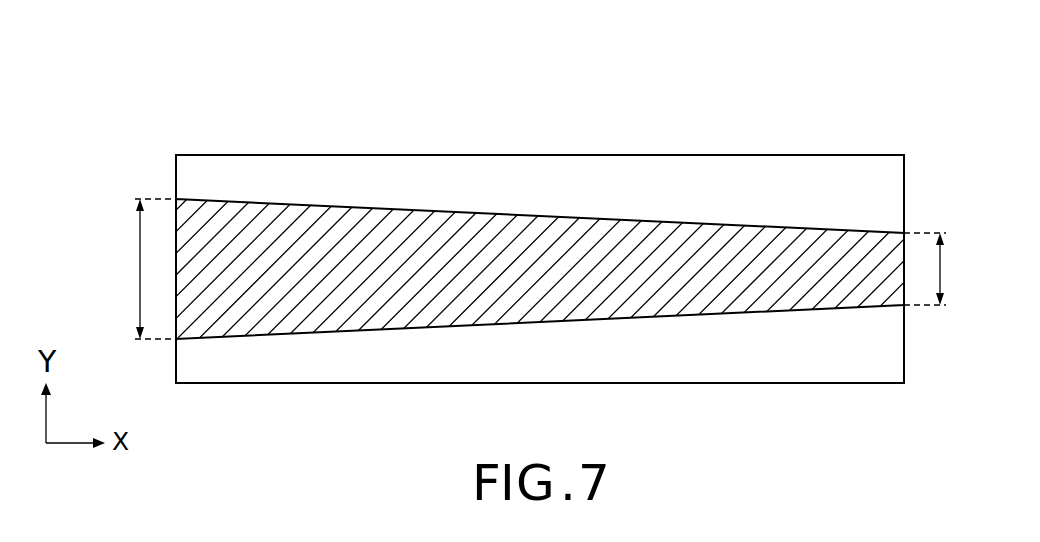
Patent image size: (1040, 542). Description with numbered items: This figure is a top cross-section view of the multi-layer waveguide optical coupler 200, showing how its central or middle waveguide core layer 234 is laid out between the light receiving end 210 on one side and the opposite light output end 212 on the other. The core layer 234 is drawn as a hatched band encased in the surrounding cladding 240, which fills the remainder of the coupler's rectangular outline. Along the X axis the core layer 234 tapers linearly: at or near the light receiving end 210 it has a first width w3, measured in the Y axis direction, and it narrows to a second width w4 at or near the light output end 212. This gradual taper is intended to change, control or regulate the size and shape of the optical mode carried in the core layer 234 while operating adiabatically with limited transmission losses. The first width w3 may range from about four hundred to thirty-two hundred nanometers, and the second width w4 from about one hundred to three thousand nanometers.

The multi-layer waveguide optical coupler 200 is at (77, 53).
The light receiving end 210 is at (165, 178).
The light output end 212 is at (916, 349).
The central waveguide core layer 234 is at (418, 233).
The cladding 240 is at (632, 167).
The first width w3 is at (140, 269).
The second width w4 is at (940, 269).